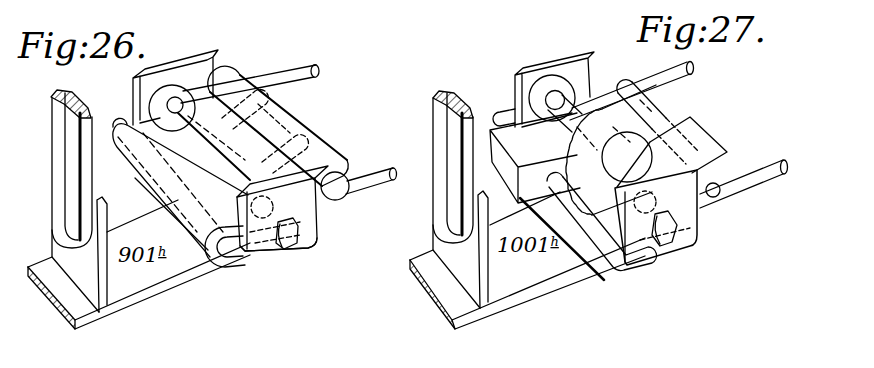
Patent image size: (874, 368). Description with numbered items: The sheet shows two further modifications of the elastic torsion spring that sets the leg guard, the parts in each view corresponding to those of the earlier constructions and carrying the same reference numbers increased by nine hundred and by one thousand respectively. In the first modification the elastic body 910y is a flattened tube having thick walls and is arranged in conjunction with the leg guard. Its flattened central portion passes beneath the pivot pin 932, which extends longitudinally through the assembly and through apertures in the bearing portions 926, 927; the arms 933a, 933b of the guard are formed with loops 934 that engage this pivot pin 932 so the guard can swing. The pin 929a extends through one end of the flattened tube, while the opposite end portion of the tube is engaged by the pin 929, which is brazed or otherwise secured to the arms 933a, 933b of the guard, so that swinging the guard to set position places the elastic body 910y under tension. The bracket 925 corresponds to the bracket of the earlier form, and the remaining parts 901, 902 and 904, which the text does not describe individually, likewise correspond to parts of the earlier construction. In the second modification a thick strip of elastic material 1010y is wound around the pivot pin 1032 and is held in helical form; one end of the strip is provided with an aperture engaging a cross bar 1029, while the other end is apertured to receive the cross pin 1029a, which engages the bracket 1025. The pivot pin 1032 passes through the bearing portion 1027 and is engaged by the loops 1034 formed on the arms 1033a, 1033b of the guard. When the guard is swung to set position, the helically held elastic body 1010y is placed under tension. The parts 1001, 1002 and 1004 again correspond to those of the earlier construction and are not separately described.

In FIG. 26, the base plate 901 is at (72, 303).
In FIG. 26, the upright 902 is at (67, 250).
In FIG. 26, the spring clip 904 is at (77, 157).
In FIG. 26, the elastic body 910y is at (252, 140).
In FIG. 26, the bracket 925 is at (196, 240).
In FIG. 26, the bearing portion 926 is at (300, 252).
In FIG. 26, the bearing portion 927 is at (204, 66).
In FIG. 26, the pin 929 is at (262, 101).
In FIG. 26, the pin 929a is at (250, 268).
In FIG. 26, the pivot pin 932 is at (300, 240).
In FIG. 26, the arm of the guard 933a is at (368, 177).
In FIG. 26, the arm of the guard 933b is at (299, 66).
In FIG. 26, the loops 934 is at (167, 90).
In FIG. 27, the base plate 1001 is at (433, 277).
In FIG. 27, the upright 1002 is at (472, 283).
In FIG. 27, the spring clip 1004 is at (440, 118).
In FIG. 27, the elastic body 1010y is at (692, 120).
In FIG. 27, the bracket 1025 is at (578, 243).
In FIG. 27, the bearing portion 1027 is at (584, 70).
In FIG. 27, the cross bar 1029 is at (648, 106).
In FIG. 27, the cross pin 1029a is at (608, 272).
In FIG. 27, the pivot pin 1032 is at (678, 232).
In FIG. 27, the arm of the guard 1033a is at (765, 167).
In FIG. 27, the arm of the guard 1033b is at (694, 70).
In FIG. 27, the loops 1034 is at (548, 83).